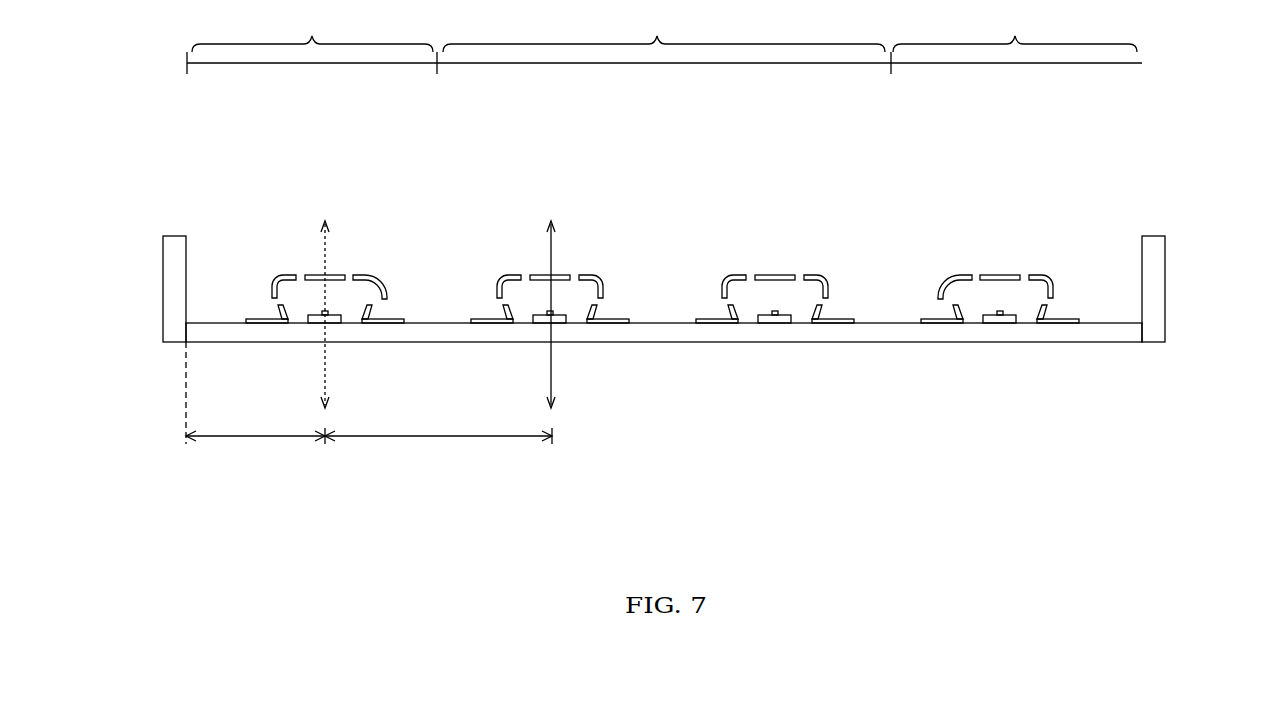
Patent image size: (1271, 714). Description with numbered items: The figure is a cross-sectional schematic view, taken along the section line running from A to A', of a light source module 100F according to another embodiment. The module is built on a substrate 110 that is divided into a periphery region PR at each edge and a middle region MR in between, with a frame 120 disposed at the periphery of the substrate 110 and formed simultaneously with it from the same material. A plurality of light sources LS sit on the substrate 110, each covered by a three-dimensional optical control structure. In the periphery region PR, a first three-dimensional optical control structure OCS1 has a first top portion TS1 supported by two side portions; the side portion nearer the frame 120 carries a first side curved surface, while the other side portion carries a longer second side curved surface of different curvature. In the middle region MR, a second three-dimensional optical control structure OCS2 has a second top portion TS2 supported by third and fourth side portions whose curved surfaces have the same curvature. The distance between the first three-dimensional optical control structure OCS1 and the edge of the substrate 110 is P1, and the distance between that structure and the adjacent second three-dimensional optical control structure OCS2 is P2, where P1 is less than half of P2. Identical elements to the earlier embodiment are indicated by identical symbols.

The periphery region PR is at (664, 27).
The middle region MR is at (664, 29).
The first top portion TS1 is at (336, 265).
The second top portion TS2 is at (564, 265).
The first three-dimensional optical control structure OCS1 is at (362, 275).
The second three-dimensional optical control structure OCS2 is at (597, 275).
The light source LS is at (777, 325).
The substrate 110 is at (1085, 330).
The frame 120 is at (1153, 247).
The light source module 100F is at (1172, 512).
The section line end A is at (153, 393).
The section line end A' is at (1192, 407).
The distance between first optical control structure and substrate edge P1 is at (255, 425).
The distance between first and second optical control structures P2 is at (438, 425).